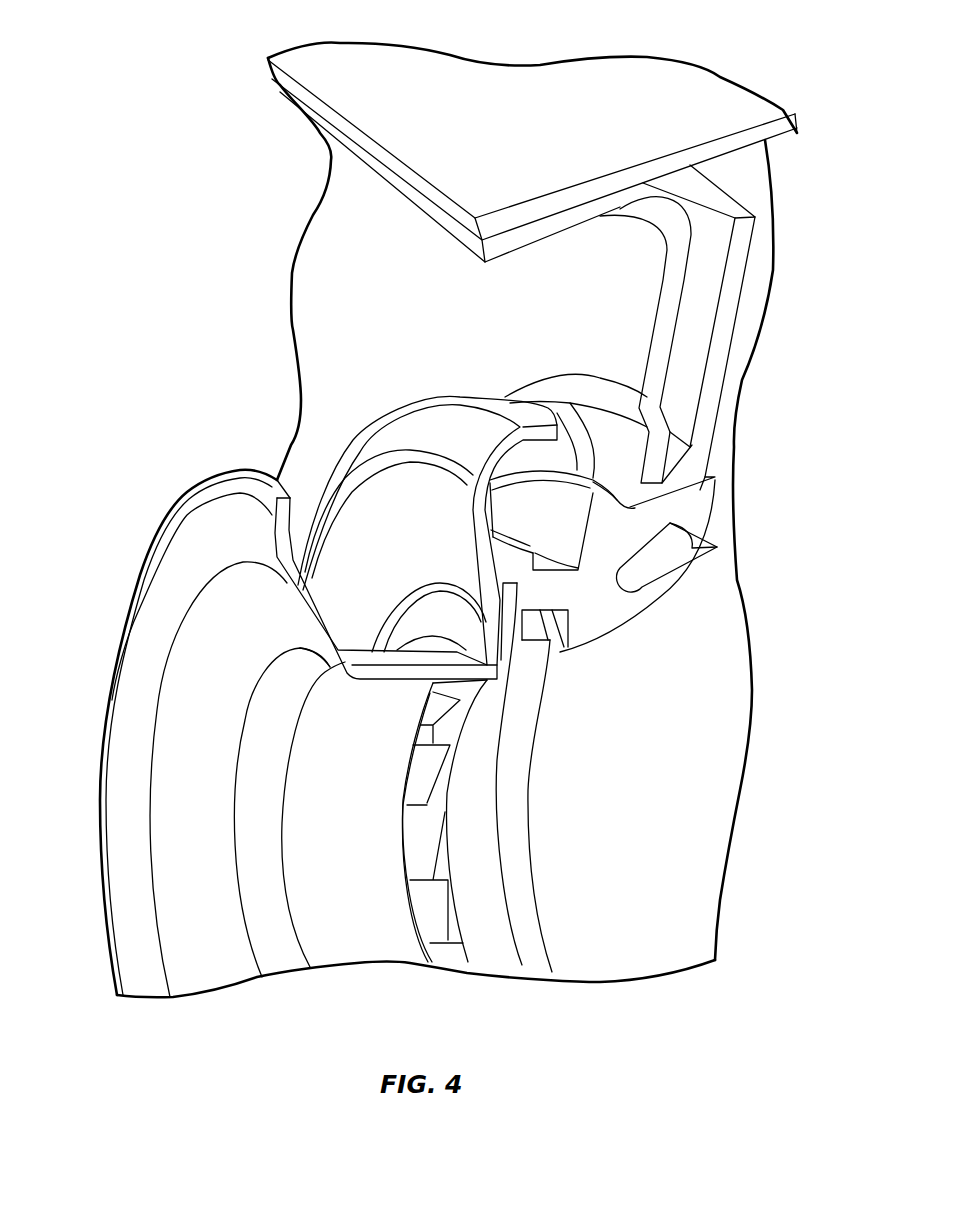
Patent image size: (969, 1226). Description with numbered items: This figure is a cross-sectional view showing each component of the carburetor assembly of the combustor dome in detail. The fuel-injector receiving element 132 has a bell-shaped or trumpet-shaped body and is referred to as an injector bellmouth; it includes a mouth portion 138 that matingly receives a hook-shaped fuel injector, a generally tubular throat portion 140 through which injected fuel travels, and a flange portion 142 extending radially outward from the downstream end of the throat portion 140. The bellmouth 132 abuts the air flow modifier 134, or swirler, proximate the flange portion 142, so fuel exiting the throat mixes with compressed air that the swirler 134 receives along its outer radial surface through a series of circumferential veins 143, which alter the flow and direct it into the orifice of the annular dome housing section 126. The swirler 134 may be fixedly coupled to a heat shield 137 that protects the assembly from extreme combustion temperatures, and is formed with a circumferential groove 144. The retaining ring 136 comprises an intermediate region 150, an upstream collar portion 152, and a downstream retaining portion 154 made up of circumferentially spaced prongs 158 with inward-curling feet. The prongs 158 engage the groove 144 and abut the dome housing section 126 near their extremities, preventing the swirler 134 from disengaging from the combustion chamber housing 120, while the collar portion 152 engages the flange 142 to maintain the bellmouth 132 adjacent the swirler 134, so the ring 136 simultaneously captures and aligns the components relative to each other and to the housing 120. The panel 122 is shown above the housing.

The combustion chamber housing 120 is at (745, 180).
The panel 122 is at (520, 83).
The annular dome housing section 126 is at (345, 290).
The fuel-injector receiving element 132 is at (119, 580).
The air flow modifier 134 is at (498, 952).
The retaining ring 136 is at (412, 395).
The heat shield 137 is at (715, 270).
The mouth portion 138 is at (175, 928).
The throat portion 140 is at (370, 935).
The flange portion 142 is at (480, 653).
The circumferential veins 143 is at (430, 920).
The circumferential groove 144 is at (640, 507).
The intermediate region 150 is at (395, 487).
The collar portion 152 is at (435, 608).
The retaining portion 154 is at (507, 396).
The prongs 158 is at (553, 402).